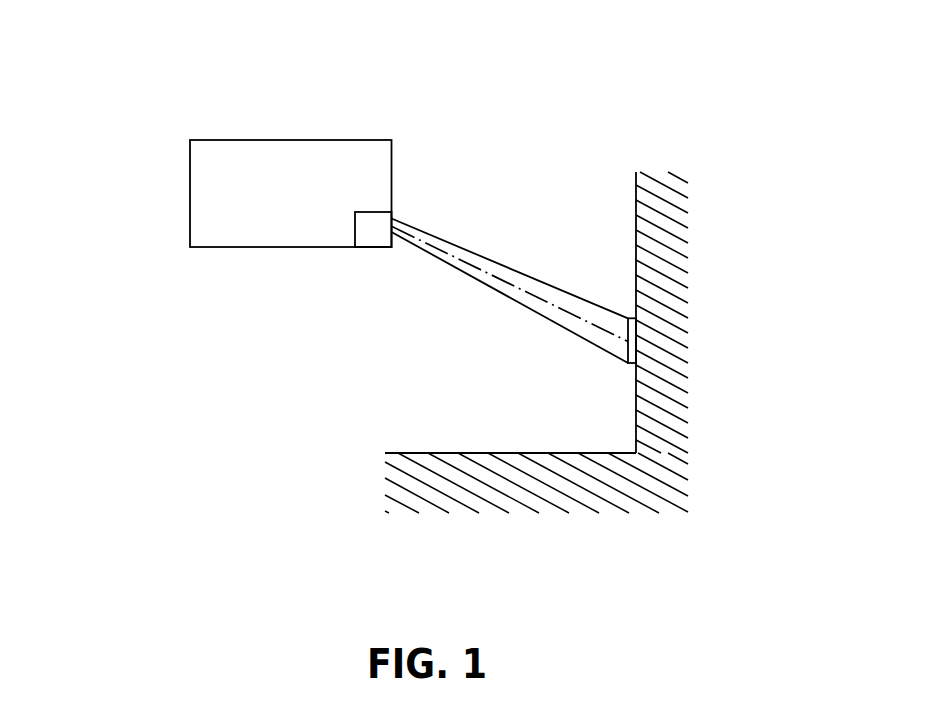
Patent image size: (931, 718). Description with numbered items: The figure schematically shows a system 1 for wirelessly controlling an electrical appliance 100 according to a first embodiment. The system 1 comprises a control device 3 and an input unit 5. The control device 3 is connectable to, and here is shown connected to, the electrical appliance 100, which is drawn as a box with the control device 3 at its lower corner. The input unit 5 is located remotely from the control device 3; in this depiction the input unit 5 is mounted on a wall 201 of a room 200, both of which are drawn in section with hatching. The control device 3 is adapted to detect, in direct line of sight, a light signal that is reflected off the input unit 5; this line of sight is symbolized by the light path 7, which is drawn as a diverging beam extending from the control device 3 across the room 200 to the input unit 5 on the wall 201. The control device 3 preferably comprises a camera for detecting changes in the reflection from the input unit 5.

The system 1 is at (242, 97).
The electrical appliance 100 is at (207, 195).
The control device 3 is at (373, 235).
The light path 7 is at (505, 238).
The input unit 5 is at (632, 348).
The wall 201 is at (636, 222).
The room 200 is at (515, 428).